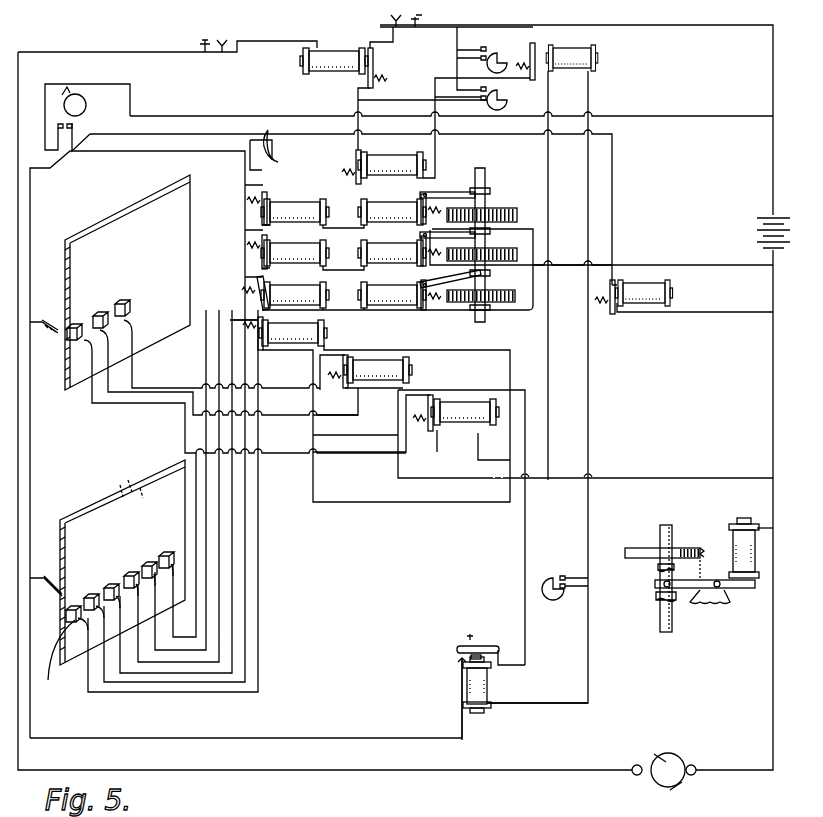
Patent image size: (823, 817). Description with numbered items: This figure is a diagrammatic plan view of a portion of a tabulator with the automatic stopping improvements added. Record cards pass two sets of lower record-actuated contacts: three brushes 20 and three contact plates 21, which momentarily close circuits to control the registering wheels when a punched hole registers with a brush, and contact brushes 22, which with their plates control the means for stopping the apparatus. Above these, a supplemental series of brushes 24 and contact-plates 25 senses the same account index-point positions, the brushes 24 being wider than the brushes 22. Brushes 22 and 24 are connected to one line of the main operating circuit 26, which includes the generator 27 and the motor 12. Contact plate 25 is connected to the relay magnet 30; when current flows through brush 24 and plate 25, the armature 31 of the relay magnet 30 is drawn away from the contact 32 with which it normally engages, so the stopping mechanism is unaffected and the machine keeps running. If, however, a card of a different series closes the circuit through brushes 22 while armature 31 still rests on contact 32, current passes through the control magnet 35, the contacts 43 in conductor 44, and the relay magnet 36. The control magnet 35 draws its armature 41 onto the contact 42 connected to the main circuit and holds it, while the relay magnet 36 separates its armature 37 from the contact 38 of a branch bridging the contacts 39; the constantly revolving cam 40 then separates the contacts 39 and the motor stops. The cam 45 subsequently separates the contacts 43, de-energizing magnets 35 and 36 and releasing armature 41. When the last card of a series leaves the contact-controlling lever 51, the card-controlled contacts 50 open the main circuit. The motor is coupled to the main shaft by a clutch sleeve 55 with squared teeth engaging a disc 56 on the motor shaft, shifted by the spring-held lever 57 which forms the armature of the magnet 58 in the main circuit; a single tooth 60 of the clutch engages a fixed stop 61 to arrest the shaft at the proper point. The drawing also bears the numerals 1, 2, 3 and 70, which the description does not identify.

The ratchet wheel 1 is at (520, 282).
The ratchet wheel 2 is at (473, 246).
The ratchet wheel 3 is at (475, 207).
The motor 12 is at (675, 755).
The brushes 20 is at (134, 478).
The contact plates 21 is at (150, 595).
The contact brushes 22 is at (43, 594).
The brushes 24 is at (62, 336).
The contact-plates 25 is at (105, 350).
The main operating circuit 26 is at (30, 230).
The generator 27 is at (758, 233).
The relay magnet 30 is at (516, 492).
The armature 31 is at (256, 345).
The contact 32 is at (243, 320).
The control magnet 35 is at (490, 690).
The relay magnet 36 is at (570, 66).
The armature 37 is at (542, 50).
The contact 38 is at (516, 92).
The contacts 39 is at (484, 47).
The constantly-revolving cam 40 is at (515, 64).
The armature 41 is at (481, 644).
The contact 42 is at (460, 658).
The contacts 43 is at (558, 574).
The conductor 44 is at (548, 450).
The constantly revolving cam 45 is at (556, 606).
The card-controlled contacts 50 is at (278, 140).
The contact-controlling lever 51 is at (276, 165).
The clutch sleeve 55 is at (656, 584).
The disc 56 is at (660, 598).
The spring-held lever 57 is at (742, 590).
The magnet 58 is at (730, 536).
The single tooth 60 is at (656, 572).
The fixed stop or tooth 61 is at (655, 572).
The shaft 70 is at (654, 573).